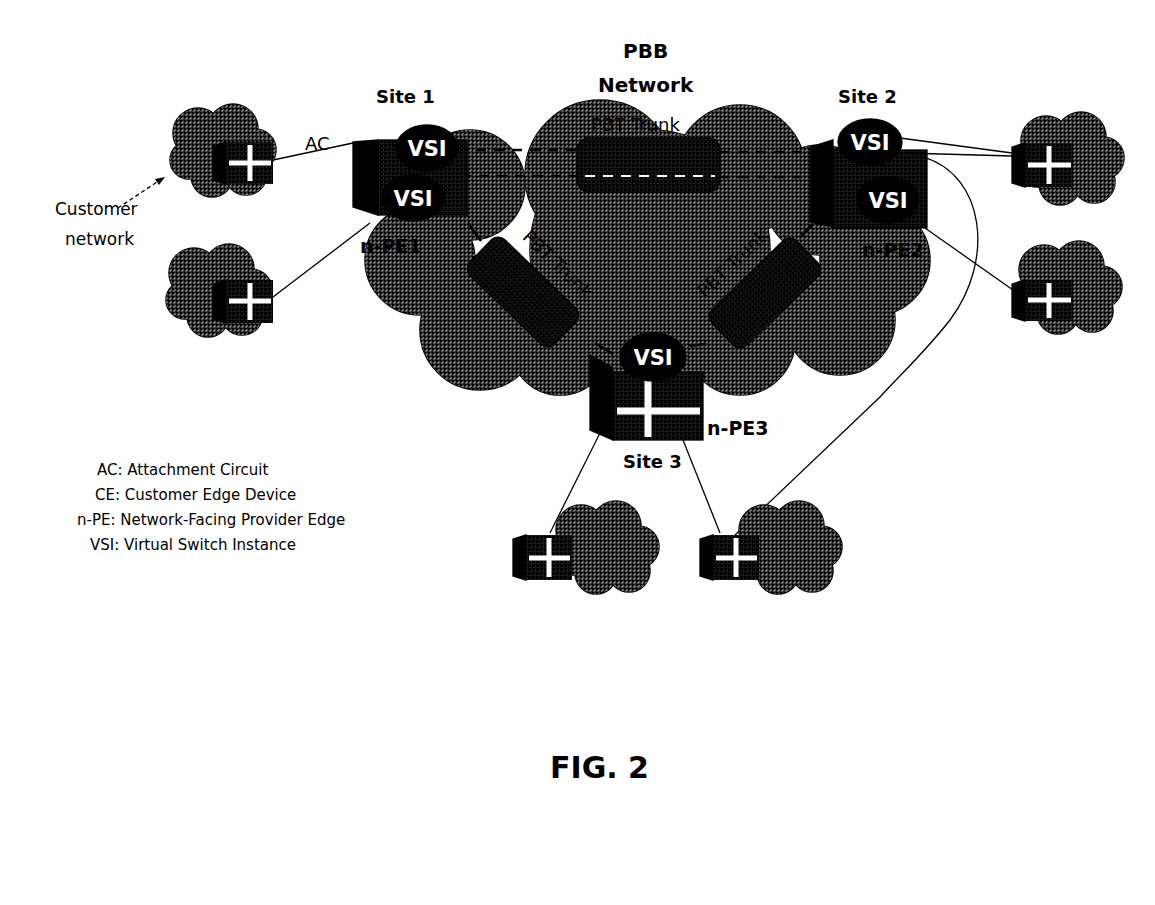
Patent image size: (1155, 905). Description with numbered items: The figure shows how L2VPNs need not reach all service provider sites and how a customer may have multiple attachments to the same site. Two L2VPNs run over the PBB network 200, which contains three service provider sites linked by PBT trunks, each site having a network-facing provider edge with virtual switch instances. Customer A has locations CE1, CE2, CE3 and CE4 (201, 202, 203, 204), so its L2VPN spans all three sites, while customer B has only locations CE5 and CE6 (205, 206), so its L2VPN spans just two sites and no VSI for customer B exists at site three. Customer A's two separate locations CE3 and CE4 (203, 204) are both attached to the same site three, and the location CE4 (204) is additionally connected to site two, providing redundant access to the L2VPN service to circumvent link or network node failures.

The PBB network 200 is at (578, 102).
The customer location CE1 201 is at (263, 142).
The customer location CE2 202 is at (1012, 150).
The customer location CE3 203 is at (543, 537).
The customer location CE4 204 is at (722, 537).
The customer location CE5 205 is at (273, 305).
The customer location CE6 206 is at (1013, 303).